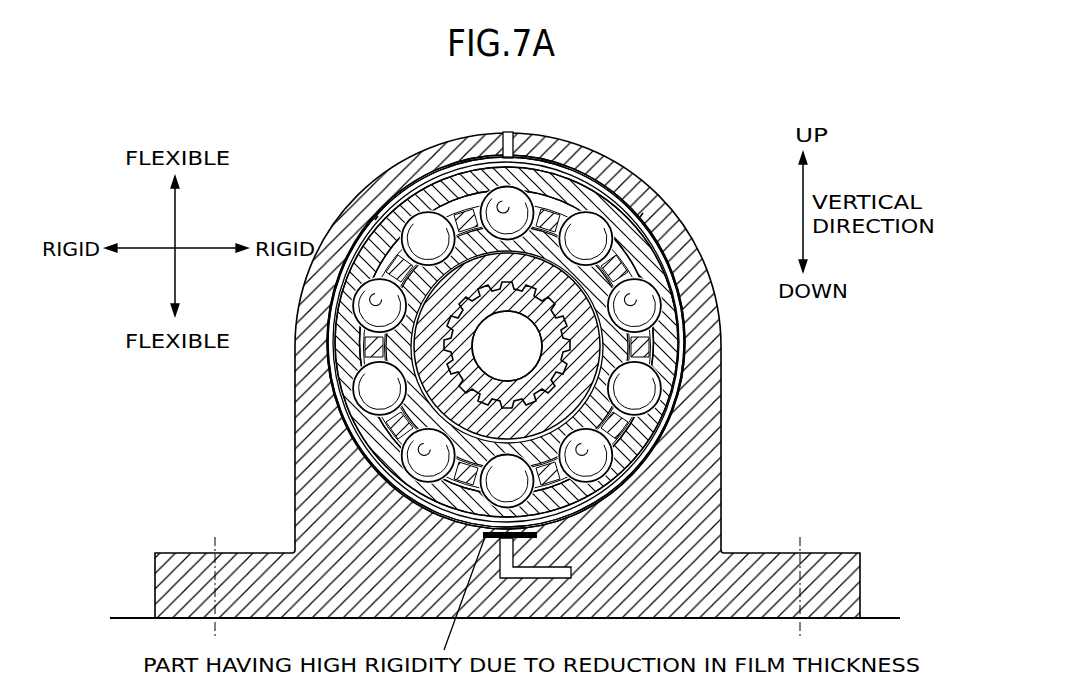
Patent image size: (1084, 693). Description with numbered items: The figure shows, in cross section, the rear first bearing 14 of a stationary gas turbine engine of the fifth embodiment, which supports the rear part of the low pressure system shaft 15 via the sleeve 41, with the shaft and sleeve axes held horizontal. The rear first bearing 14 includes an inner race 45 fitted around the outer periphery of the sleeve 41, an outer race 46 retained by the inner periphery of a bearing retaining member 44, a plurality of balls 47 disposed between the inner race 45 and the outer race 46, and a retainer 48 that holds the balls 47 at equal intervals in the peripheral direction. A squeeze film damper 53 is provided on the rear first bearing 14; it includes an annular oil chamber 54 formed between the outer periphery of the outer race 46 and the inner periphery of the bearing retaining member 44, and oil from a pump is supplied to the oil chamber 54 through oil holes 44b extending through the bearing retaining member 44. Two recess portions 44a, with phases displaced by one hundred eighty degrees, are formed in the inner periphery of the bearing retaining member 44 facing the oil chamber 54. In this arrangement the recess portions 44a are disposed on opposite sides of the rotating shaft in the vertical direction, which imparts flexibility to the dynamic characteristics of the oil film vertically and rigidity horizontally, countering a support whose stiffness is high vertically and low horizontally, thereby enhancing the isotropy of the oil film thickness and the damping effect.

The rear first bearing 14 is at (378, 224).
The low pressure system shaft 15 is at (491, 305).
The sleeve 41 is at (548, 396).
The bearing retaining member 44 is at (657, 184).
The recess portions 44a is at (535, 162).
The oil holes 44b is at (508, 133).
The inner race 45 is at (627, 277).
The outer race 46 is at (686, 319).
The balls 47 is at (598, 250).
The retainer 48 is at (552, 213).
The squeeze film damper 53 is at (408, 186).
The oil chamber 54 is at (452, 187).